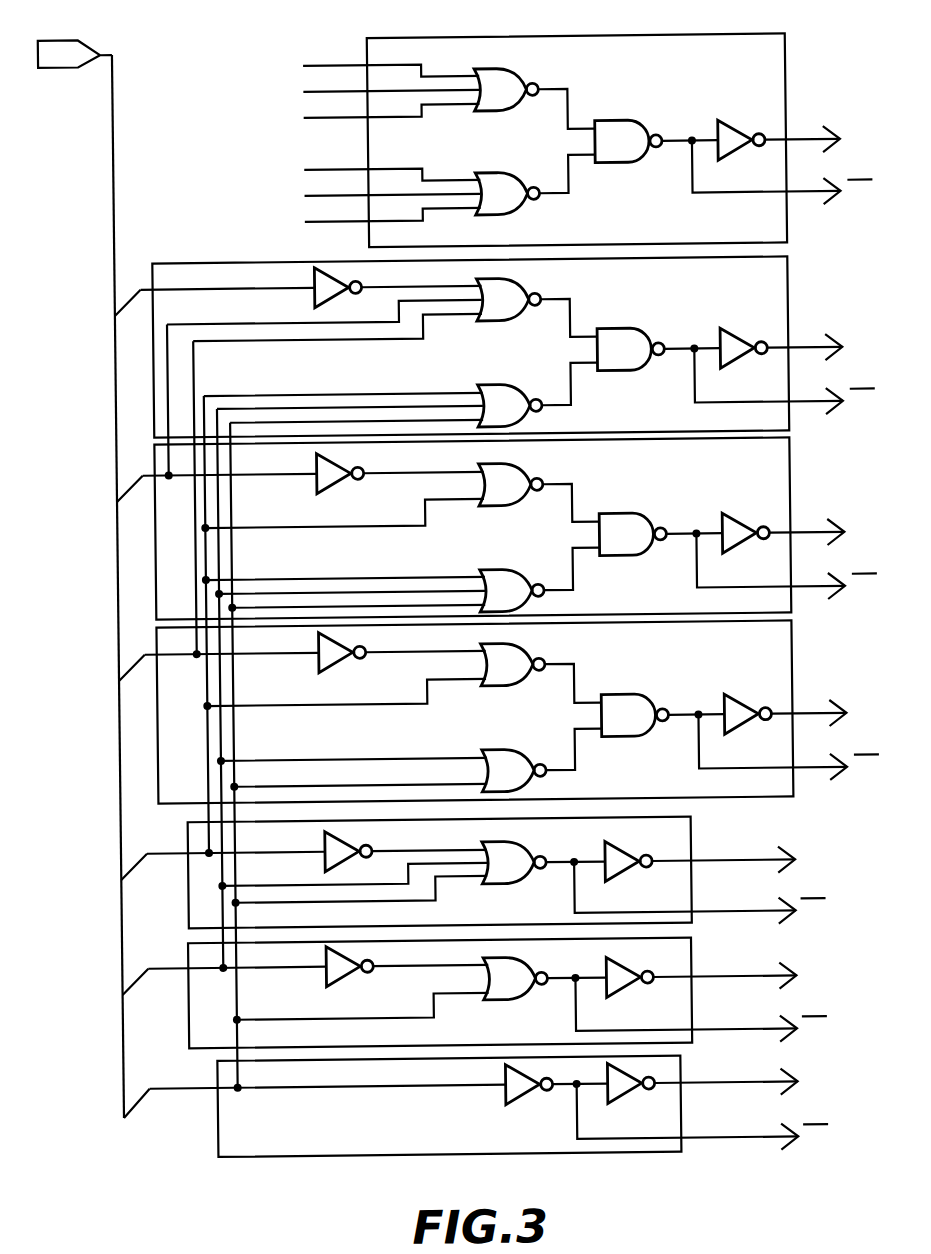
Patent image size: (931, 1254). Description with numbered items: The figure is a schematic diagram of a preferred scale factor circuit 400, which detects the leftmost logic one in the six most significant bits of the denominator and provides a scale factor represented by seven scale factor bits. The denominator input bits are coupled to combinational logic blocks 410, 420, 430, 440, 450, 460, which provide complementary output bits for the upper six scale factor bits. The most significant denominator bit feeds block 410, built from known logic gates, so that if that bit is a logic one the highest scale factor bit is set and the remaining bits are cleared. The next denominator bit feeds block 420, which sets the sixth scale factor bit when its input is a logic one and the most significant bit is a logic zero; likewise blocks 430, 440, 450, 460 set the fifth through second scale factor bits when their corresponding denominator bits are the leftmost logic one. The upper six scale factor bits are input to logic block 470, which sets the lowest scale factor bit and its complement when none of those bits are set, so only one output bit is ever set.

The scale factor circuit 400 is at (215, 151).
The combinational logic block 410 is at (672, 1080).
The combinational logic block 420 is at (683, 965).
The combinational logic block 430 is at (683, 848).
The combinational logic block 440 is at (786, 681).
The combinational logic block 450 is at (783, 510).
The combinational logic block 460 is at (787, 323).
The logic block 470 is at (784, 114).